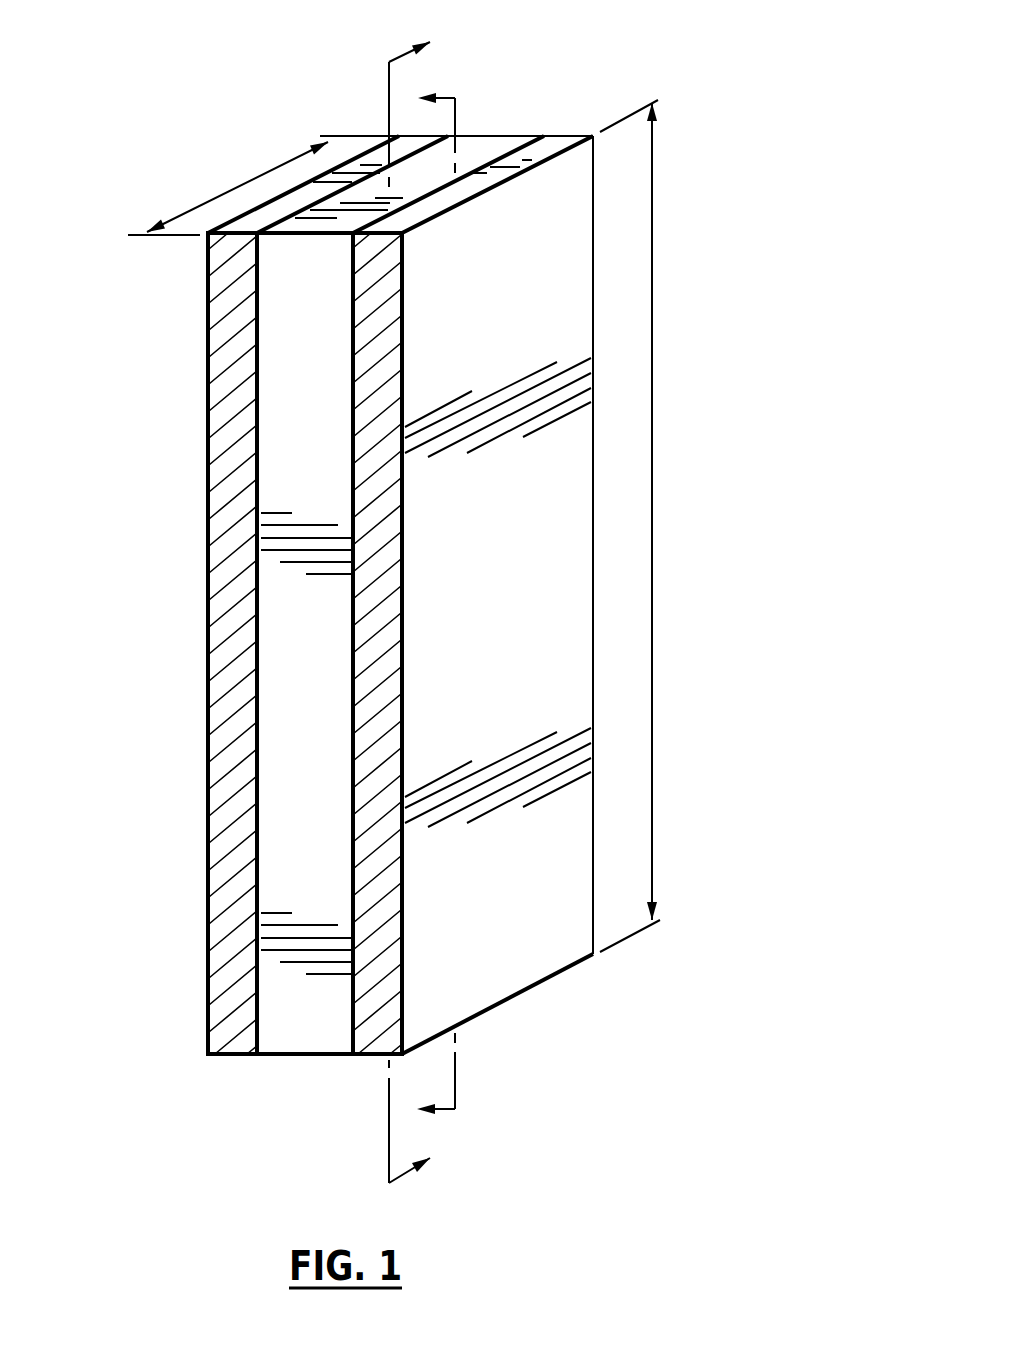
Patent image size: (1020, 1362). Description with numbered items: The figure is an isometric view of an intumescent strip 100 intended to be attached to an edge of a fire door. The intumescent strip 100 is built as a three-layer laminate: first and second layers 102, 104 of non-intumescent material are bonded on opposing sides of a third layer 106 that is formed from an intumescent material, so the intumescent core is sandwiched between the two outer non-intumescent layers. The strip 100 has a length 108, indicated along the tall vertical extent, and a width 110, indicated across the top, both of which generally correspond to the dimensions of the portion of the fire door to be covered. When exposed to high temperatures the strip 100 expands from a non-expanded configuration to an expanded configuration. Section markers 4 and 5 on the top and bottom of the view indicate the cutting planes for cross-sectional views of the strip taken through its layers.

The intumescent strip 100 is at (333, 529).
The first layer 102 is at (230, 295).
The second layer 104 is at (370, 413).
The third layer 106 is at (282, 362).
The length 108 is at (652, 487).
The width 110 is at (227, 187).
The section line 4- 4 is at (422, 600).
The section line 5- 5 is at (423, 605).